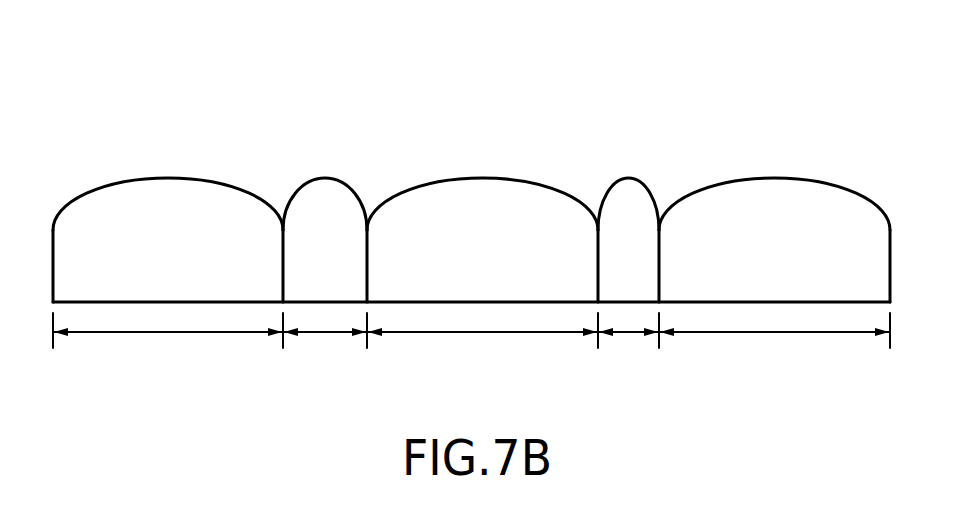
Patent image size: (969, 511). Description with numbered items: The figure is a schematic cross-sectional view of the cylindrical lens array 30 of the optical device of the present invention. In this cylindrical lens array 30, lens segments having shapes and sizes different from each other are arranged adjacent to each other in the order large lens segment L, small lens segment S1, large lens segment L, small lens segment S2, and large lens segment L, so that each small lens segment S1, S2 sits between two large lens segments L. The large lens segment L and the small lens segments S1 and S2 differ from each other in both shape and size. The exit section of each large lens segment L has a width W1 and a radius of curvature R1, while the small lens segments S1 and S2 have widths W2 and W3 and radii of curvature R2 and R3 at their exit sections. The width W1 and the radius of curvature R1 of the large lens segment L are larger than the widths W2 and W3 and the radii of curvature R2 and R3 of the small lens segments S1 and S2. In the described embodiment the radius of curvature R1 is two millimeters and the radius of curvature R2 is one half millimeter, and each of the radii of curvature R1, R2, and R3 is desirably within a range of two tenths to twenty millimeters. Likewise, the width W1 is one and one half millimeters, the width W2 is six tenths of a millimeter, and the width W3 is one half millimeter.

The cylindrical lens array 30 is at (495, 63).
The large lens segment L is at (471, 207).
The small lens segment S1 is at (337, 180).
The small lens segment S2 is at (650, 180).
The radius of curvature R1 is at (146, 193).
The radius of curvature R2 is at (332, 248).
The radius of curvature R3 is at (642, 248).
The width W1 is at (471, 344).
The width W2 is at (325, 352).
The width W3 is at (628, 352).